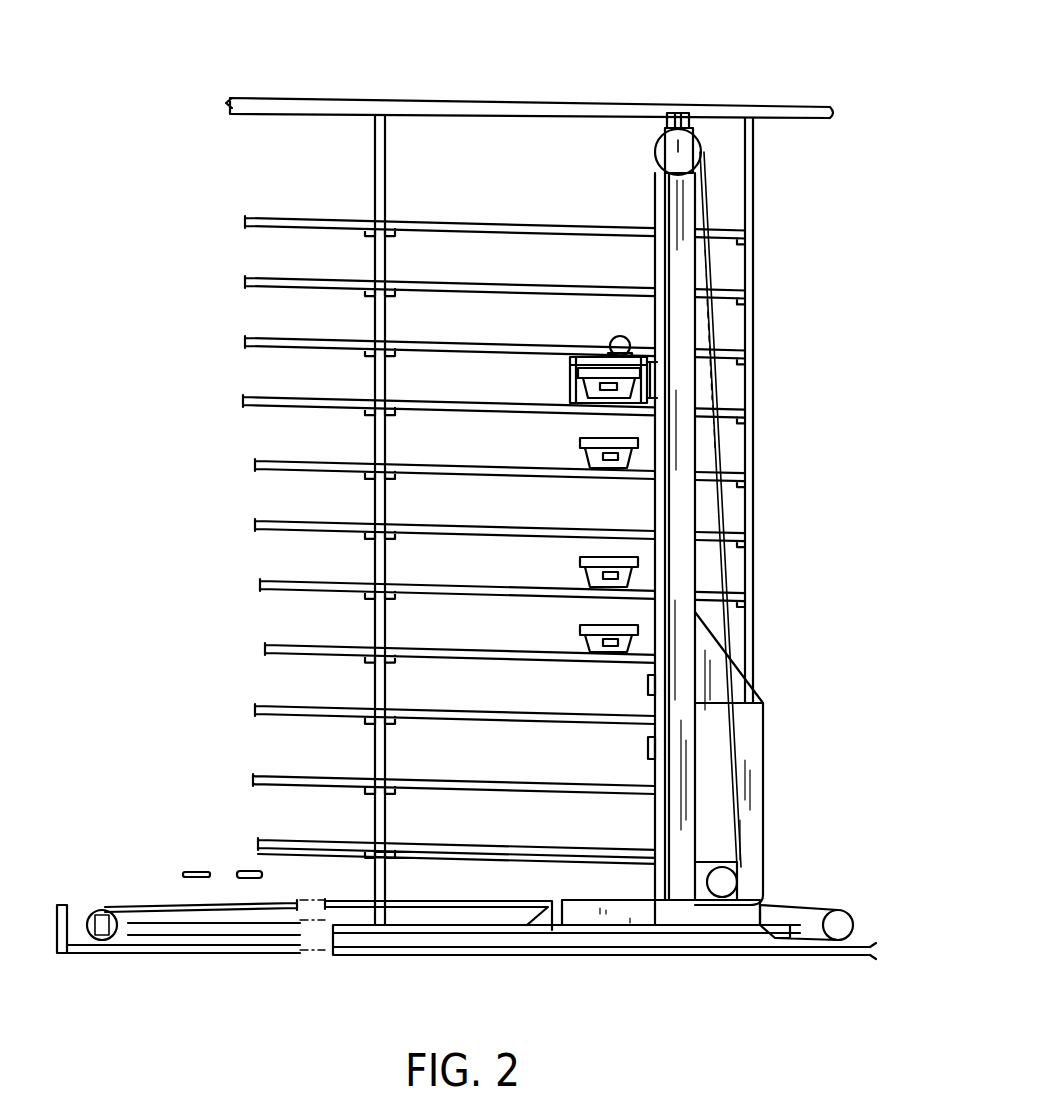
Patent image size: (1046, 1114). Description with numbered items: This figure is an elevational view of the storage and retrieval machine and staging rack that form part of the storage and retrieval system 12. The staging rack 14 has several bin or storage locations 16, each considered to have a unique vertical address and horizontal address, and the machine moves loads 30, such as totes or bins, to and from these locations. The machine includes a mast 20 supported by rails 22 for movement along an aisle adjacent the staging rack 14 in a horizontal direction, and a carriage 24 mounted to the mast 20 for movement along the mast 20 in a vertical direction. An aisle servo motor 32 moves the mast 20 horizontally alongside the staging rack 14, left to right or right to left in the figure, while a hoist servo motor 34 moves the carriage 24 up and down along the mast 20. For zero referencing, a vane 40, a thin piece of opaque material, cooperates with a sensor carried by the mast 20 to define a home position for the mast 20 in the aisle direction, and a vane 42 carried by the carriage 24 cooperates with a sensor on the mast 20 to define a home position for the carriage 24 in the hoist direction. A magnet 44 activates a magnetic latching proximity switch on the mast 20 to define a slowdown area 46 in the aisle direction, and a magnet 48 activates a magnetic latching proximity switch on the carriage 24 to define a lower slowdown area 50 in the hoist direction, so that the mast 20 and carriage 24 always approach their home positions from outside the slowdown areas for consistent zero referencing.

The storage and retrieval system 12 is at (806, 22).
The staging rack 14 is at (515, 197).
The bin locations 16 is at (482, 498).
The mast 20 is at (682, 196).
The rails 22 is at (548, 940).
The carriage 24 is at (568, 378).
The loads 30 is at (578, 456).
The aisle servo motor 32 is at (720, 886).
The hoist servo motor 34 is at (848, 918).
The vane 40 is at (194, 872).
The vane 42 is at (648, 750).
The magnet 44 is at (262, 875).
The slowdown area 46 is at (297, 898).
The magnet 48 is at (648, 686).
The lower slowdown area 50 is at (798, 658).